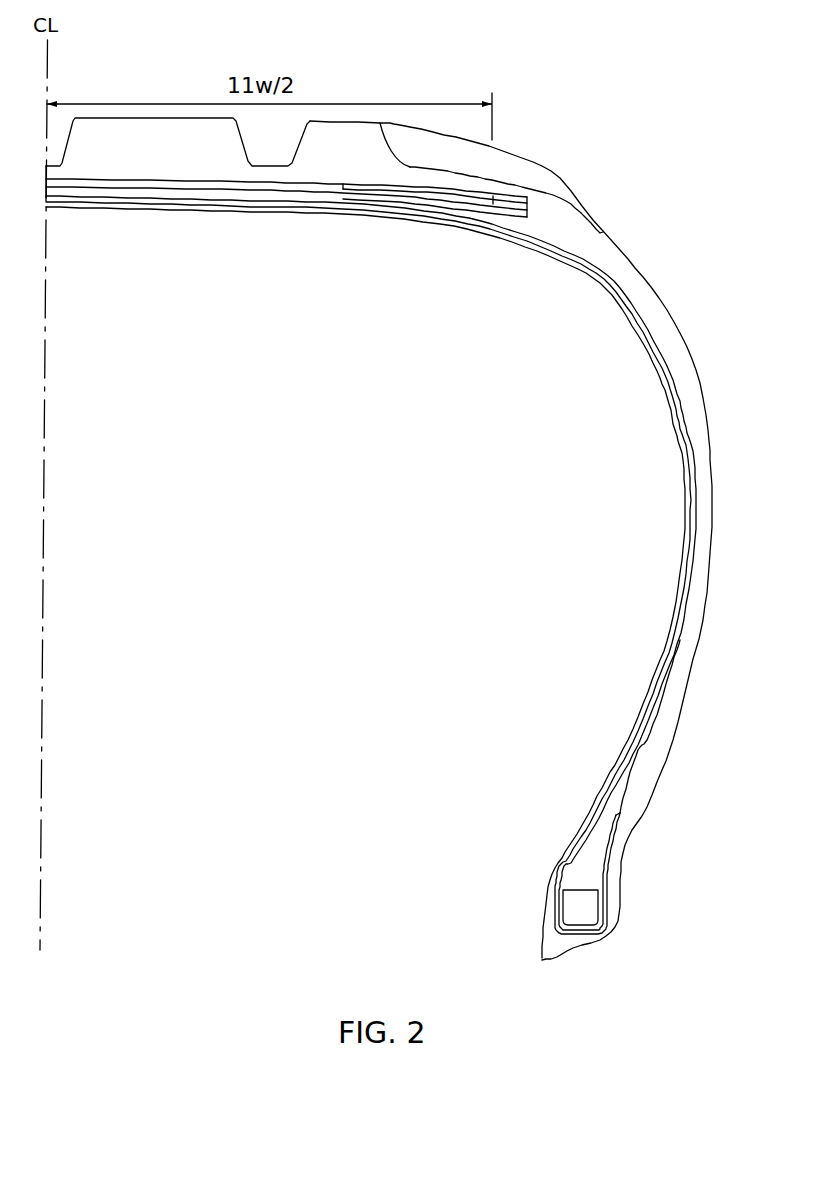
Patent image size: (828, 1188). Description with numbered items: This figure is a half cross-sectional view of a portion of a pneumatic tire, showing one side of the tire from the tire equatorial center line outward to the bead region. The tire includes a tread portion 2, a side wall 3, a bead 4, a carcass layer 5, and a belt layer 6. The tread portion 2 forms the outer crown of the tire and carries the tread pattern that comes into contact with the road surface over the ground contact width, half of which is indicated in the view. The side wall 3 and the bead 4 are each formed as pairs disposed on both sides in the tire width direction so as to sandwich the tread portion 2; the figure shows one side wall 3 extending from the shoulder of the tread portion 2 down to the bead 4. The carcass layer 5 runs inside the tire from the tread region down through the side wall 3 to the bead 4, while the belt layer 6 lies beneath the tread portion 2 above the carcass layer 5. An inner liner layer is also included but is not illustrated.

The tread portion 2 is at (545, 150).
The side wall 3 is at (707, 535).
The bead 4 is at (592, 903).
The carcass layer 5 is at (691, 456).
The belt layer 6 is at (537, 195).